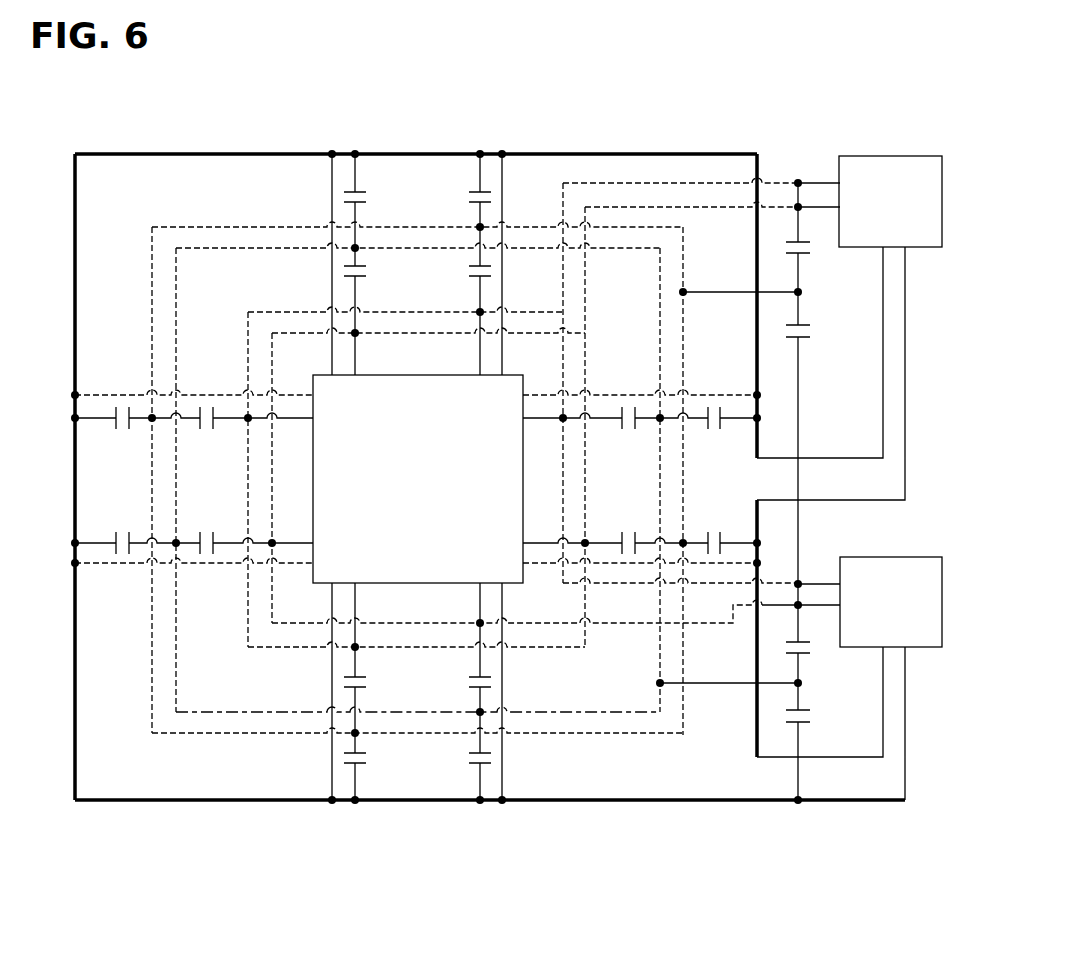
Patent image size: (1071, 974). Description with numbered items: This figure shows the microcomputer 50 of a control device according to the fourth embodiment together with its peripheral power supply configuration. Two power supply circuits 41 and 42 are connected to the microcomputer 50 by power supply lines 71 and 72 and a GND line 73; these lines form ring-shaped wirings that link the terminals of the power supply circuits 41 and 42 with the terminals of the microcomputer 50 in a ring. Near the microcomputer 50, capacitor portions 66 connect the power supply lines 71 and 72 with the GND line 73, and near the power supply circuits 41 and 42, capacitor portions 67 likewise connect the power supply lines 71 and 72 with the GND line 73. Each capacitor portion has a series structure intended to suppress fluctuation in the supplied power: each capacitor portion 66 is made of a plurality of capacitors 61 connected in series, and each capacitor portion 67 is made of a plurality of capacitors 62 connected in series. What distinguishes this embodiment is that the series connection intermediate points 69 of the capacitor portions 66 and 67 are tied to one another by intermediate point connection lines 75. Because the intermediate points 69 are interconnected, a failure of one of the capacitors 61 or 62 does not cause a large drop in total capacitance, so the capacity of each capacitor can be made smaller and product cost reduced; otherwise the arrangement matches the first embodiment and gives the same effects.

The power supply circuit 41 is at (930, 556).
The power supply circuit 42 is at (930, 155).
The microcomputer 50 is at (313, 582).
The capacitor 61 is at (470, 196).
The capacitor 62 is at (810, 253).
The capacitor portion 66 is at (364, 181).
The capacitor portion 67 is at (806, 349).
The series connection intermediate point 69 is at (352, 250).
The power supply line 71 is at (620, 625).
The power supply line 72 is at (648, 181).
The GND line 73 is at (650, 802).
The intermediate point connection line 75 is at (583, 737).